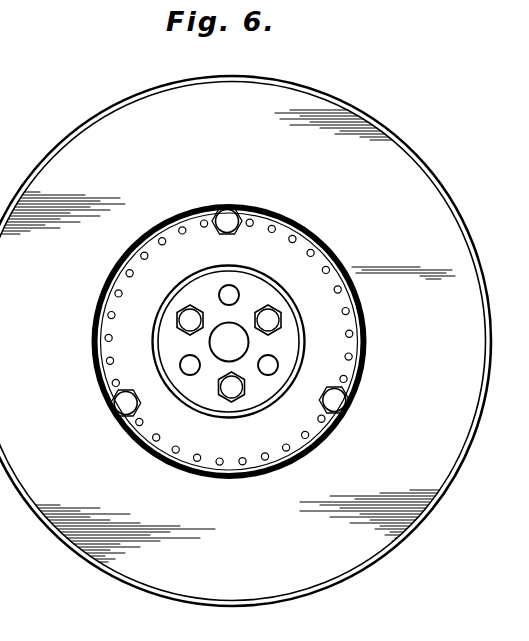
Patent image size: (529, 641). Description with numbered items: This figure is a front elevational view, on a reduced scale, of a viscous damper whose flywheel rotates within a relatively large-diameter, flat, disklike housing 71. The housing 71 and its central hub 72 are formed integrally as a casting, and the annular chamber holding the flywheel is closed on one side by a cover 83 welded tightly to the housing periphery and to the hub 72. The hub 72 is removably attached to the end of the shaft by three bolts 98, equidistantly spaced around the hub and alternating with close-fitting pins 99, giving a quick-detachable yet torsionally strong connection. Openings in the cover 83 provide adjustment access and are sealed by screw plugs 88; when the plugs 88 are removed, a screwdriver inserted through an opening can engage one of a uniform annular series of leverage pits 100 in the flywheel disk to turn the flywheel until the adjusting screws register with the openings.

The housing 71 is at (482, 261).
The cover 83 is at (383, 196).
The leverage pit 100 is at (318, 252).
The screw plug 88 is at (224, 221).
The hub 72 is at (258, 348).
The bolt 98 is at (275, 314).
The pin 99 is at (232, 293).